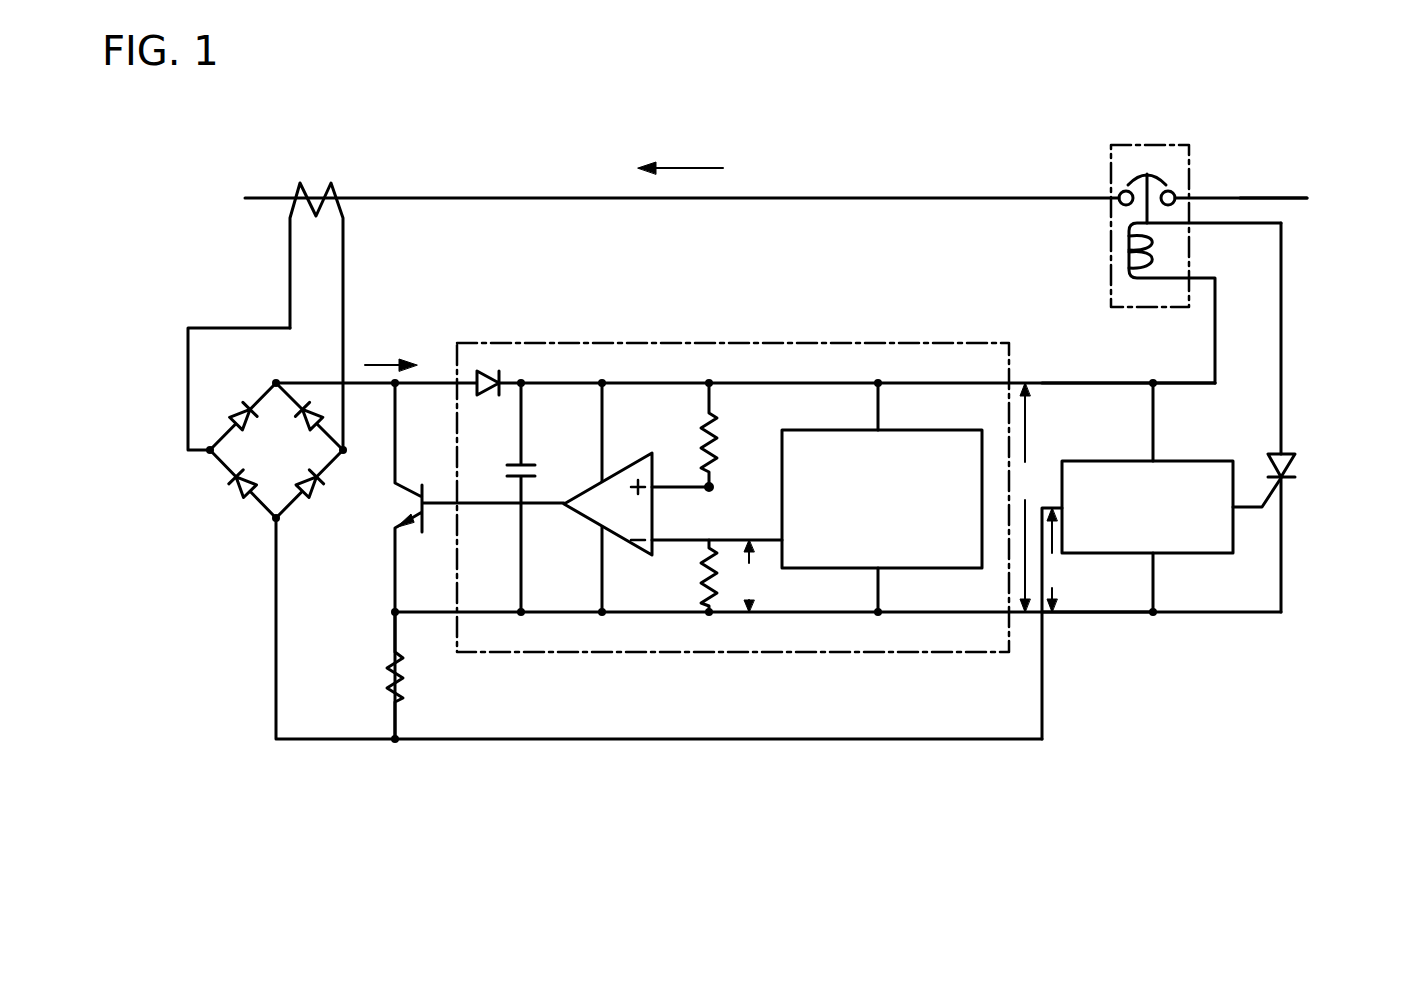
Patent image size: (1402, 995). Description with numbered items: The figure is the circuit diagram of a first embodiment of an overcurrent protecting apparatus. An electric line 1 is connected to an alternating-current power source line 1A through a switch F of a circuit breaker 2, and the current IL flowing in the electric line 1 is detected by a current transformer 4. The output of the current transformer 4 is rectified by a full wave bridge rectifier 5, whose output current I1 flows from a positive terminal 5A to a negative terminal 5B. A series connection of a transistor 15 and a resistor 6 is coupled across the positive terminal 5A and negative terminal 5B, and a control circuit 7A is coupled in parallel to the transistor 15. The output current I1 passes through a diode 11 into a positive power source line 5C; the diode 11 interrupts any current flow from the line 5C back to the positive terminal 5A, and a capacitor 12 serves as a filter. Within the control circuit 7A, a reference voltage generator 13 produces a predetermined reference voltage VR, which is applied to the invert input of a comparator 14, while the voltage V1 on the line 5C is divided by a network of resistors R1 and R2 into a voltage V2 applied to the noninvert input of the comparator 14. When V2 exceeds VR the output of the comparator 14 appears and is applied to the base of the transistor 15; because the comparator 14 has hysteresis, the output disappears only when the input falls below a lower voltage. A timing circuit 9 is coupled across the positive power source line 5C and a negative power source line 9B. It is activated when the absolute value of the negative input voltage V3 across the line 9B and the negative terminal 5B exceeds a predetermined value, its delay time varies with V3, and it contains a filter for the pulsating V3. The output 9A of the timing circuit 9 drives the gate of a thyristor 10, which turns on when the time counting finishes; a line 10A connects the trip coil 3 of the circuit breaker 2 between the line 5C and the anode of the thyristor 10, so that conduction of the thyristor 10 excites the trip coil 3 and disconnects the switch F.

The electric line 1 is at (877, 197).
The power source line 1A is at (1247, 197).
The current IL is at (680, 153).
The circuit breaker 2 is at (1111, 185).
The trip coil 3 is at (1122, 245).
The switch F is at (1147, 176).
The current transformer 4 is at (342, 195).
The full wave bridge rectifier 5 is at (232, 468).
The positive terminal 5A is at (276, 383).
The negative terminal 5B is at (274, 520).
The positive power source line 5C is at (1095, 383).
The output current I1 is at (391, 349).
The resistor 6 is at (387, 672).
The control circuit 7A is at (634, 652).
The timing circuit 9 is at (1200, 553).
The output 9A is at (1248, 507).
The negative power source line 9B is at (1105, 612).
The thyristor 10 is at (1283, 452).
The thyristor line 10A is at (1281, 330).
The diode 11 is at (487, 371).
The capacitor 12 is at (533, 462).
The reference voltage generator 13 is at (905, 430).
The comparator 14 is at (635, 455).
The transistor 15 is at (408, 512).
The resistor R1 is at (700, 430).
The resistor R2 is at (717, 600).
The voltage V1 is at (1034, 497).
The voltage V2 is at (710, 487).
The negative input voltage V3 is at (1063, 560).
The reference voltage VR is at (761, 576).